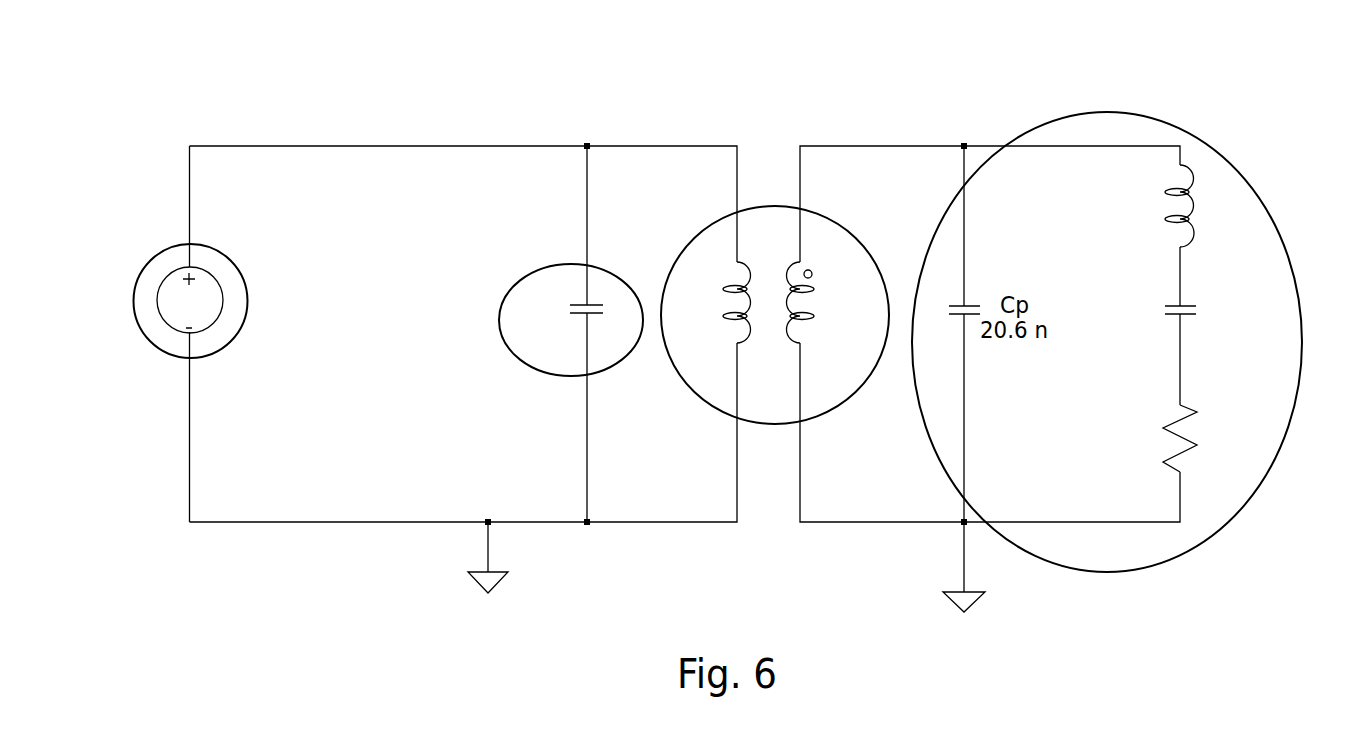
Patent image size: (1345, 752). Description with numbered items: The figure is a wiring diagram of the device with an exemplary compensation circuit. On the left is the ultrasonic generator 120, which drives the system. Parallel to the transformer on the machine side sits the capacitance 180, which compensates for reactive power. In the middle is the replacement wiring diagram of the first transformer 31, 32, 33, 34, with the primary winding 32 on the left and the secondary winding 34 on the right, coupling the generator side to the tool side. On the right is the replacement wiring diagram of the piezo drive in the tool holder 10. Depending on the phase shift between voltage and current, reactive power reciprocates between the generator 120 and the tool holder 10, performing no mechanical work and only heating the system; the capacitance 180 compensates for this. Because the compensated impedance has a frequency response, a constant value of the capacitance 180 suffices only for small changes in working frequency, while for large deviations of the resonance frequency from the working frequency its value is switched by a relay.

The tool holder 10 is at (1115, 112).
The first transformer 31 is at (782, 272).
The primary winding 32 is at (782, 272).
The first transformer 33 is at (782, 272).
The secondary winding 34 is at (838, 220).
The ultrasonic generator 120 is at (183, 243).
The capacitance 180 is at (568, 263).